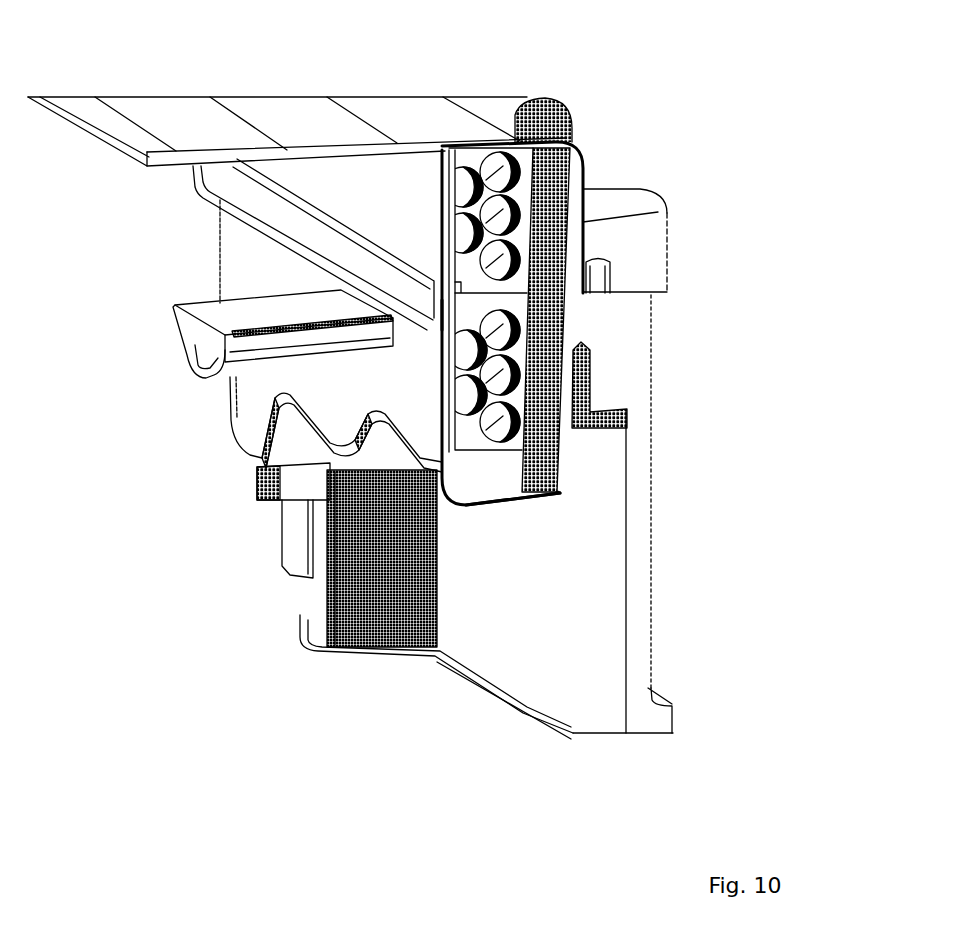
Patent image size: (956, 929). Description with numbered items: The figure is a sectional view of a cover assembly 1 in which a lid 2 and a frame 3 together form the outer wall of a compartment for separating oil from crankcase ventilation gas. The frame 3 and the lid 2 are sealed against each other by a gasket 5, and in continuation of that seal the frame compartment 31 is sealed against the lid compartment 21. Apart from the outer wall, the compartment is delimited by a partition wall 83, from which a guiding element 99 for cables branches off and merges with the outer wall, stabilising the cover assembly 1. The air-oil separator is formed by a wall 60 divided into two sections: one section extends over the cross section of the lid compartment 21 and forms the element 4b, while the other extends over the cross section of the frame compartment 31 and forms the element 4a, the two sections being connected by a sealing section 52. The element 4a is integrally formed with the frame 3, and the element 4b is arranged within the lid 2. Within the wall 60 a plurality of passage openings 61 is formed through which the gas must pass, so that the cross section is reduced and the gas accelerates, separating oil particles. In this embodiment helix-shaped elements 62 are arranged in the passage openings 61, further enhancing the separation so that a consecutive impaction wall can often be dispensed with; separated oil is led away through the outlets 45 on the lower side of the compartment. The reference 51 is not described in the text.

The cover assembly 1 is at (146, 58).
The lid 2 is at (409, 97).
The frame 3 is at (512, 425).
The first element of the air-oil separator 4a is at (505, 380).
The second element of the air-oil separator 4b is at (512, 155).
The gasket 5 is at (653, 295).
The lid compartment 21 is at (440, 205).
The frame compartment 31 is at (437, 384).
The outlet for separated oil 45 is at (273, 497).
The partition wall 51 is at (453, 313).
The sealing section 52 is at (517, 282).
The wall 60 is at (527, 223).
The passage openings 61 is at (503, 400).
The helix-shaped elements 62 is at (497, 430).
The partition wall 83 is at (452, 443).
The guiding element 99 is at (232, 339).